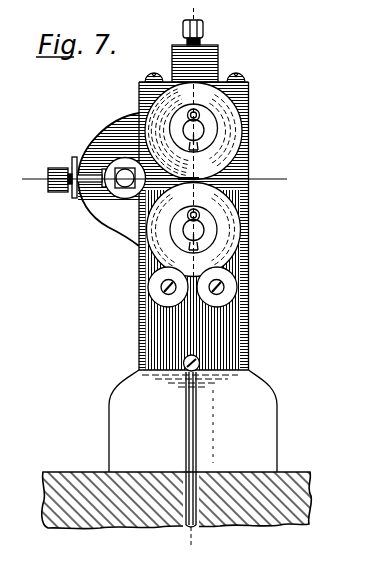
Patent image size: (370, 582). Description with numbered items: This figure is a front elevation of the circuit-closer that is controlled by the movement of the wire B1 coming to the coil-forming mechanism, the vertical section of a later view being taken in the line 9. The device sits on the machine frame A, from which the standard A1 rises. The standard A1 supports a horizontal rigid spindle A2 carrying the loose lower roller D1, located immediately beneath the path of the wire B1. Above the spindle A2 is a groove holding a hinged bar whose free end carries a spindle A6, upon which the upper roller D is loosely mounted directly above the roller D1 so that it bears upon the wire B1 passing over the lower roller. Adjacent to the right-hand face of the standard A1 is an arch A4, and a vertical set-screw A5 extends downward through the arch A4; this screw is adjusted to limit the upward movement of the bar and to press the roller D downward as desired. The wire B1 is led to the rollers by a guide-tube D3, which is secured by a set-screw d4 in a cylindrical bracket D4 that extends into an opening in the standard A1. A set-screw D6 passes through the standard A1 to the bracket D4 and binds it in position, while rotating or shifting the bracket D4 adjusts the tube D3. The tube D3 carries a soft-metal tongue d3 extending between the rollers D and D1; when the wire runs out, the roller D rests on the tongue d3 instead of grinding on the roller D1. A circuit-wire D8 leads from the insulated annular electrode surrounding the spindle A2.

The base or bed A is at (177, 491).
The standard A1 is at (193, 421).
The horizontal rigid spindle A2 is at (190, 232).
The arch A4 is at (208, 62).
The vertical set-screw A5 is at (204, 32).
The spindle A6 is at (204, 131).
The roller D is at (193, 131).
The loose roller D1 is at (182, 196).
The guide-tube D3 is at (130, 143).
The bracket D4 is at (110, 167).
The set-screw D6 is at (57, 168).
The circuit-wire D8 is at (186, 447).
The tongue d3 is at (180, 223).
The set-screw d4 is at (123, 182).
The wire B1 is at (278, 181).
The section line 9 is at (189, 545).